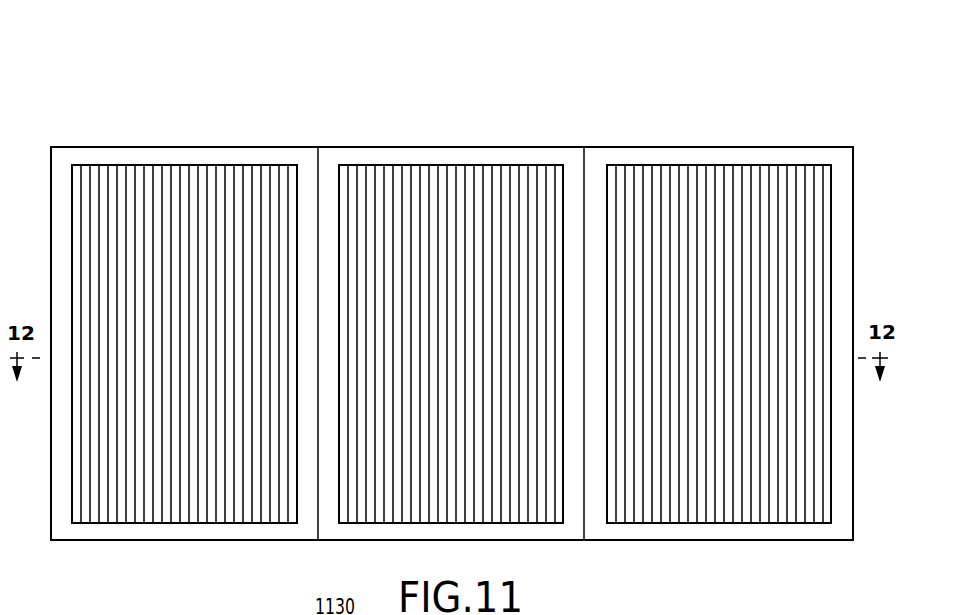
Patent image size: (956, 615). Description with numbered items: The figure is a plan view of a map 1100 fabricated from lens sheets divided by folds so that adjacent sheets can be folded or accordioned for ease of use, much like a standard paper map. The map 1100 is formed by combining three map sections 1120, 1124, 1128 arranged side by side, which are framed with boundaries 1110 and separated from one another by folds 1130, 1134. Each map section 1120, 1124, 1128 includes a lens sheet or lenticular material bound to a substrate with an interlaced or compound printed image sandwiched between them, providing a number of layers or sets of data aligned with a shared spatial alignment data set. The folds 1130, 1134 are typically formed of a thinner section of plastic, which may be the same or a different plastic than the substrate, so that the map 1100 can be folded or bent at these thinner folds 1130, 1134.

The map 1100 is at (108, 82).
The boundaries 1110 is at (128, 157).
The map section 1120 is at (192, 165).
The map section 1124 is at (438, 165).
The map section 1128 is at (785, 165).
The fold 1130 is at (322, 184).
The fold 1134 is at (588, 185).